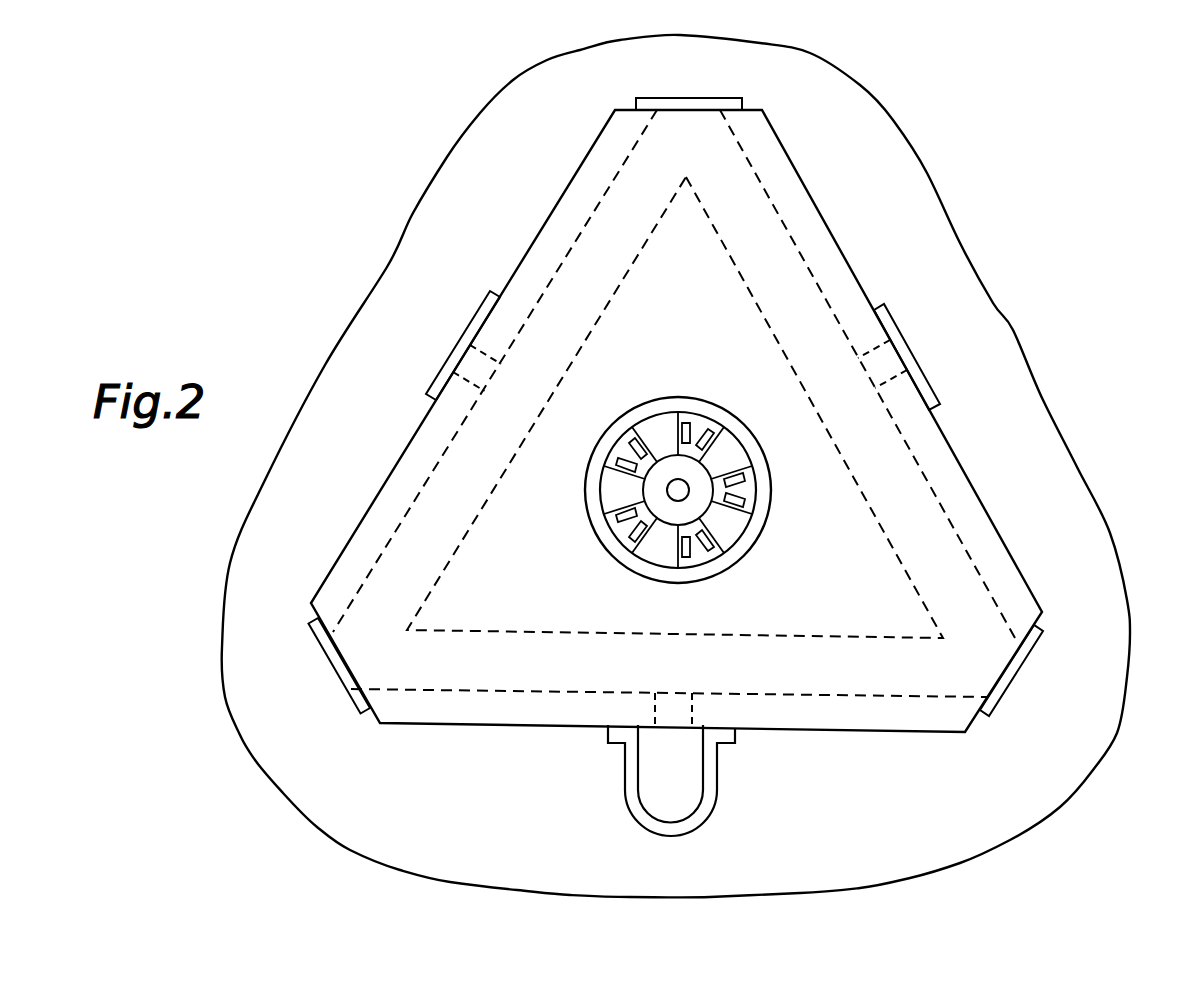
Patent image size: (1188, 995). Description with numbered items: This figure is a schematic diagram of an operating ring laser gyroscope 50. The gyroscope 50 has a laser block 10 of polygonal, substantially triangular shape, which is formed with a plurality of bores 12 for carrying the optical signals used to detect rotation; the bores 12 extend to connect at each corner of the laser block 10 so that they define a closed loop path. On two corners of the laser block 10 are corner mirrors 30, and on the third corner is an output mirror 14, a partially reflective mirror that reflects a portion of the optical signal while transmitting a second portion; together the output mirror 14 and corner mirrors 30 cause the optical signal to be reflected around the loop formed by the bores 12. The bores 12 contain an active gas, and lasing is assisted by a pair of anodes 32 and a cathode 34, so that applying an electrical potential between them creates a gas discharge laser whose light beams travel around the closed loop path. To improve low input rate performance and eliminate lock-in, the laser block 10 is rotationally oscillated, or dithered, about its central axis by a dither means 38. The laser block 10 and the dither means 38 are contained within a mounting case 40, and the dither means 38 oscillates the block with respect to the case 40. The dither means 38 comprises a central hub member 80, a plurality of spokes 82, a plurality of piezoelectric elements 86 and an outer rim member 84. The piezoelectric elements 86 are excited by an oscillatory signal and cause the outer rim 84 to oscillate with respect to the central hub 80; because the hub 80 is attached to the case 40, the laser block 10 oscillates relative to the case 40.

The laser block 10 is at (808, 196).
The bores 12 is at (592, 222).
The output mirror 14 is at (700, 99).
The corner mirrors 30 is at (346, 692).
The anodes 32 is at (482, 304).
The cathode 34 is at (706, 812).
The dither means 38 is at (548, 536).
The mounting case 40 is at (882, 107).
The ring laser gyroscope 50 is at (1060, 175).
The central hub member 80 is at (703, 488).
The spokes 82 is at (660, 555).
The outer rim member 84 is at (660, 398).
The piezoelectric elements 86 is at (705, 540).